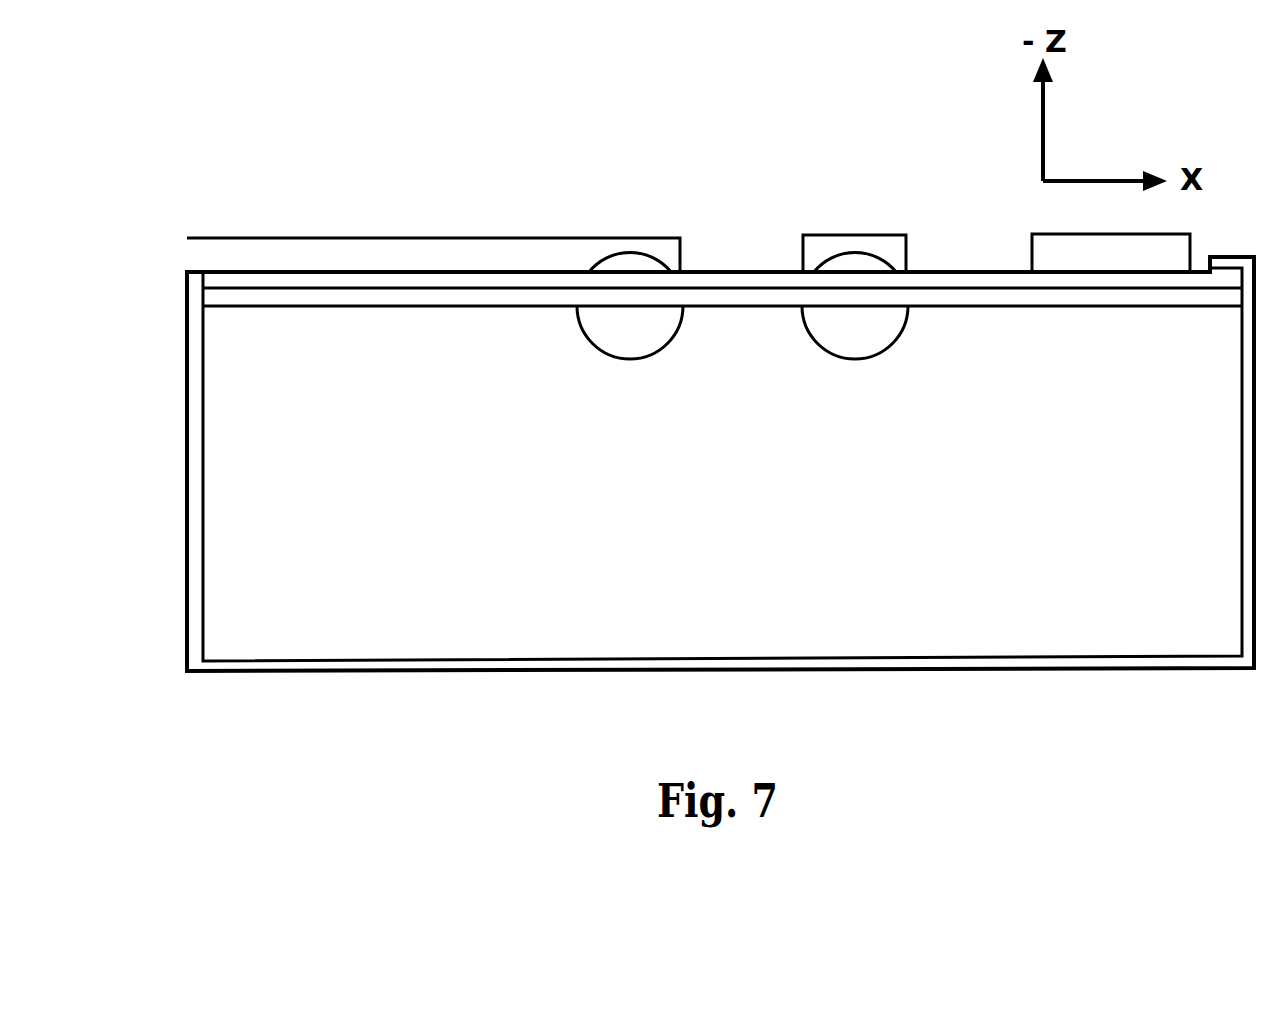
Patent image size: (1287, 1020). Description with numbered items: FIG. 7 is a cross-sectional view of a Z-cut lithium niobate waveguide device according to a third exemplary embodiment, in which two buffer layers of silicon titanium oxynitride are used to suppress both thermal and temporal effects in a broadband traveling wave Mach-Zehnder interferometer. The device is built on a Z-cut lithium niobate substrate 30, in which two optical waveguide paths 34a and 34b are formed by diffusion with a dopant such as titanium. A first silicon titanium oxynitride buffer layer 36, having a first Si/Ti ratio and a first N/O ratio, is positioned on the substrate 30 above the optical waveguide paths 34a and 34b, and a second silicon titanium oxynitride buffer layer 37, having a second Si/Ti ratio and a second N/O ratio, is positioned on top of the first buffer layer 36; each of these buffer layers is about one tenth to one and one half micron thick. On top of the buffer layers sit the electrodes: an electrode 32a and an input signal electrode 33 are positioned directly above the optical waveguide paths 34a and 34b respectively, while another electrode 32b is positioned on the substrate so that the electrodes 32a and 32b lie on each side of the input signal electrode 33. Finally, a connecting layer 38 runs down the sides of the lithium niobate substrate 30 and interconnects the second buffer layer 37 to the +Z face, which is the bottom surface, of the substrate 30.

The Z-cut lithium niobate substrate 30 is at (278, 370).
The electrode 32a is at (433, 255).
The electrode 32b is at (1111, 253).
The input signal electrode 33 is at (854, 253).
The optical waveguide path 34a is at (630, 306).
The optical waveguide path 34b is at (855, 306).
The first silicon titanium oxynitride buffer layer 36 is at (722, 392).
The second silicon titanium oxynitride buffer layer 37 is at (722, 359).
The connecting layer 38 is at (722, 500).